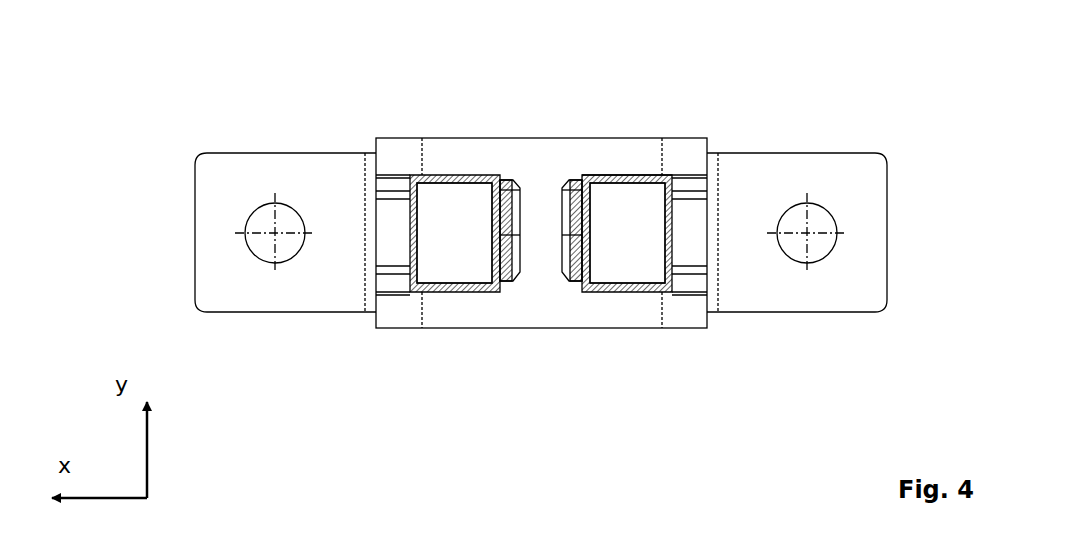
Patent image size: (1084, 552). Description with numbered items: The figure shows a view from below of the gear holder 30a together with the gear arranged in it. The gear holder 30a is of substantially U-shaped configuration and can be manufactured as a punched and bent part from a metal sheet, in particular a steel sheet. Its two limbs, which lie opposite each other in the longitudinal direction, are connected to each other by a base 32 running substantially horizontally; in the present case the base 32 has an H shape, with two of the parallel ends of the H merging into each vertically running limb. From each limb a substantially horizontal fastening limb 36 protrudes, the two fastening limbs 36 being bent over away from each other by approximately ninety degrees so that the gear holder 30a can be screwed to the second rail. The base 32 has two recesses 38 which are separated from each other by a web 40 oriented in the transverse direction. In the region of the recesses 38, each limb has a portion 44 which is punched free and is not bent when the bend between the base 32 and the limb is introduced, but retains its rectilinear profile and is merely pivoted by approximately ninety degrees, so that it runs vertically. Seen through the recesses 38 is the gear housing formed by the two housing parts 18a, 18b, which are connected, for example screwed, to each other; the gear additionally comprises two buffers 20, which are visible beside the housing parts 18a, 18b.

The gear holder 30a is at (250, 118).
The base 32 is at (548, 302).
The fastening limb 36 is at (235, 270).
The portion 44 is at (388, 237).
The housing part 18a is at (513, 253).
The housing part 18b is at (513, 215).
The buffer 20 is at (447, 212).
The web 40 is at (543, 225).
The recess 38 is at (647, 168).